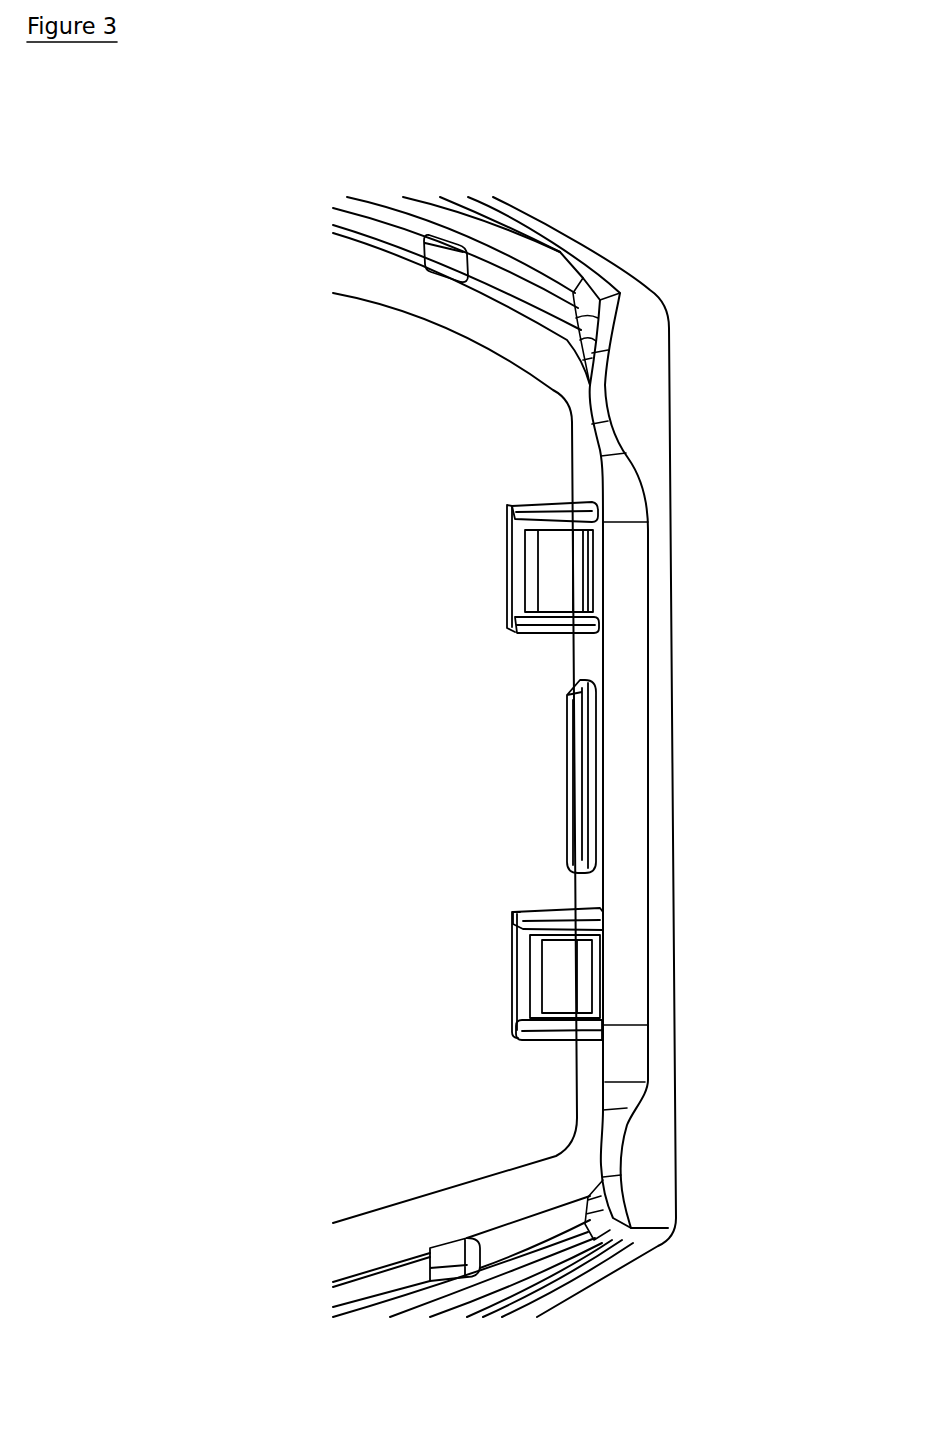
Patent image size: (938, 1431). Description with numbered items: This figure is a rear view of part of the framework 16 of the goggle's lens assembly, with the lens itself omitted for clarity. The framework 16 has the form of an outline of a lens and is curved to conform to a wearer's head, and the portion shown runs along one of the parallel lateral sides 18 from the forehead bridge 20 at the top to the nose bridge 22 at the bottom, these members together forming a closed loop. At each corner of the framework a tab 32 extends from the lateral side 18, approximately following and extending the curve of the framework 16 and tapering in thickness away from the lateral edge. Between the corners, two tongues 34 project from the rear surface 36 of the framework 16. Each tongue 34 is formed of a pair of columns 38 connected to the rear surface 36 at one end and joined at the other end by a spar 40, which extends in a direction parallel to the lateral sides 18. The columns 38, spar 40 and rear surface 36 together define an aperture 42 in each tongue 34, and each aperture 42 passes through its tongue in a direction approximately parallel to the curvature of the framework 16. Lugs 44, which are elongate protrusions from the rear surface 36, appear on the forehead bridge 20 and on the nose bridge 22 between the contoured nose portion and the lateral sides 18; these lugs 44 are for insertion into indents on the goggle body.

The framework 16 is at (706, 242).
The lateral sides 18 is at (679, 703).
The forehead bridge 20 is at (537, 214).
The nose bridge 22 is at (568, 1304).
The tabs 32 is at (604, 385).
The tongues 34 is at (514, 776).
The rear surface 36 is at (456, 313).
The columns 38 is at (547, 496).
The spar 40 is at (498, 568).
The aperture 42 is at (550, 578).
The lugs 44 is at (378, 222).